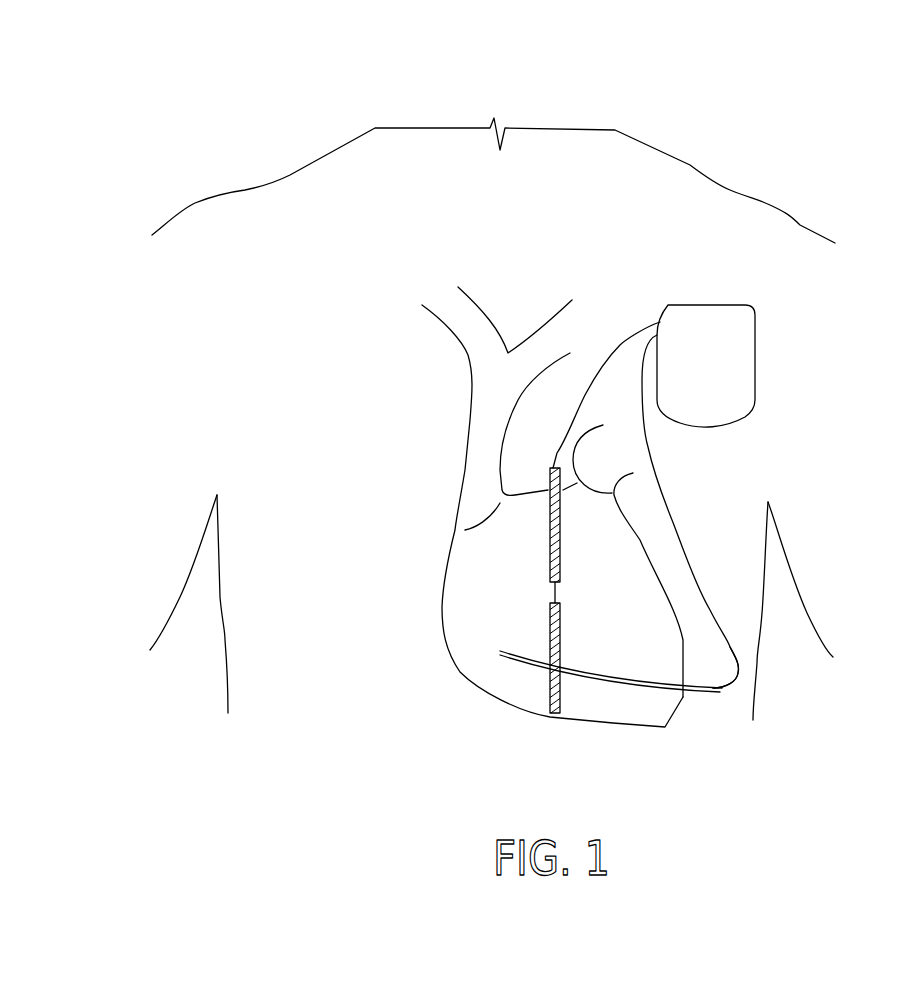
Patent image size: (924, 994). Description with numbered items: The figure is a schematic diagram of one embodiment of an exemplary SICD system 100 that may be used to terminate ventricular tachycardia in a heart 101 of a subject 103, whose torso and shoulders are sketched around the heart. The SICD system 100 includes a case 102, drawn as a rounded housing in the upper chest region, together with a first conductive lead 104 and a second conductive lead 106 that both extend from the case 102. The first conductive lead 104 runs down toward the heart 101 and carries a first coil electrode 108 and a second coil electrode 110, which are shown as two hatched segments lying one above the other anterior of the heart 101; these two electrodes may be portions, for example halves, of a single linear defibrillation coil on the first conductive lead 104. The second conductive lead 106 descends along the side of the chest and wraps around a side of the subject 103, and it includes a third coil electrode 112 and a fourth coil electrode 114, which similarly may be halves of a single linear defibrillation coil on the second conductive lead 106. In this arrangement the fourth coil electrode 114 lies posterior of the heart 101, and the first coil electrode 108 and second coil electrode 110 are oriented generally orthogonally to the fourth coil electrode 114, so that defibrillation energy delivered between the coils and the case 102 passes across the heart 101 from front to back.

The SICD system 100 is at (797, 133).
The heart 101 is at (470, 370).
The case 102 is at (705, 303).
The subject 103 is at (688, 168).
The first conductive lead 104 is at (618, 340).
The second conductive lead 106 is at (663, 490).
The first coil electrode 108 is at (548, 540).
The second coil electrode 110 is at (548, 640).
The third coil electrode 112 is at (733, 692).
The fourth coil electrode 114 is at (628, 692).